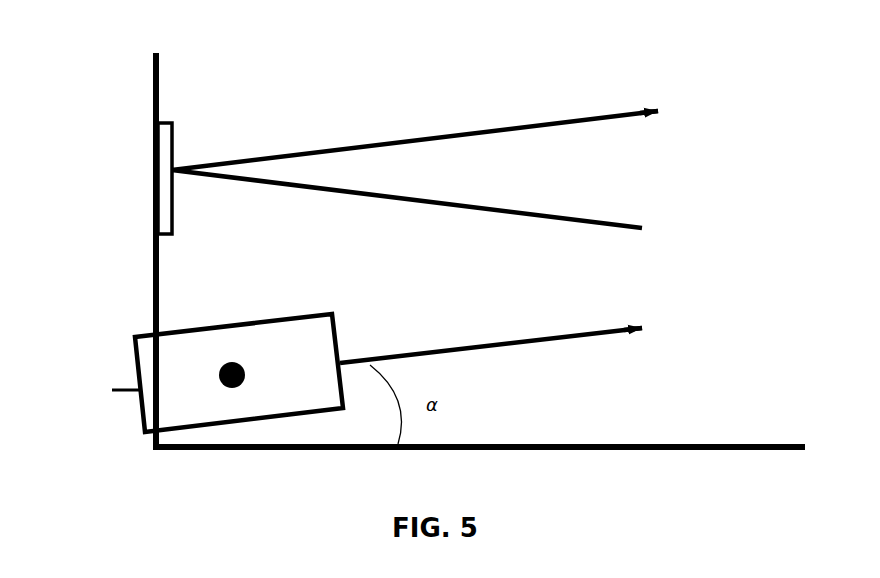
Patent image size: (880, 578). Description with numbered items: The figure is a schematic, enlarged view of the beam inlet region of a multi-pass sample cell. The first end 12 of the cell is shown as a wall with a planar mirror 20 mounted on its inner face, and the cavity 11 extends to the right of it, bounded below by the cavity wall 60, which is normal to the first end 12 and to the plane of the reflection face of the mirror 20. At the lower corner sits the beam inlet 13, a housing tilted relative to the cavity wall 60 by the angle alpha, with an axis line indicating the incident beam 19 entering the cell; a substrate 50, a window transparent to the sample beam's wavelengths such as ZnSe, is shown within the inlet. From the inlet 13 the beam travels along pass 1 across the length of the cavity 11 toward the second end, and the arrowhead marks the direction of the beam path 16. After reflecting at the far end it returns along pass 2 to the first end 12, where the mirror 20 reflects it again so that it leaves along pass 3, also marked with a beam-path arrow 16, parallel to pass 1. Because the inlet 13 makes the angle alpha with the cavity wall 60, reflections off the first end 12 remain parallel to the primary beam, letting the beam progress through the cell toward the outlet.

The pass 1 is at (572, 340).
The pass 2 is at (507, 213).
The pass 3 is at (490, 136).
The cavity 11 is at (348, 261).
The first end 12 is at (154, 88).
The beam inlet 13 is at (150, 403).
The beam path 16 is at (622, 113).
The incident beam 19 is at (137, 390).
The planar mirror 20 is at (175, 146).
The substrate 50 is at (247, 378).
The cavity wall 60 is at (585, 450).